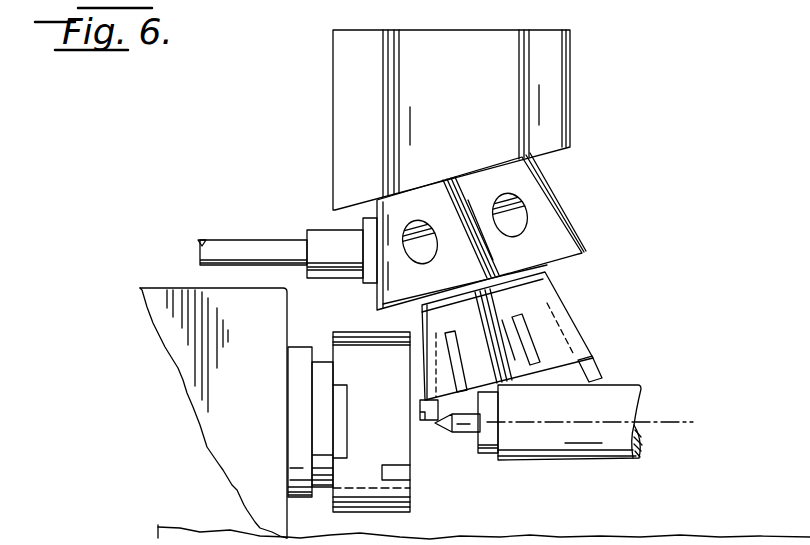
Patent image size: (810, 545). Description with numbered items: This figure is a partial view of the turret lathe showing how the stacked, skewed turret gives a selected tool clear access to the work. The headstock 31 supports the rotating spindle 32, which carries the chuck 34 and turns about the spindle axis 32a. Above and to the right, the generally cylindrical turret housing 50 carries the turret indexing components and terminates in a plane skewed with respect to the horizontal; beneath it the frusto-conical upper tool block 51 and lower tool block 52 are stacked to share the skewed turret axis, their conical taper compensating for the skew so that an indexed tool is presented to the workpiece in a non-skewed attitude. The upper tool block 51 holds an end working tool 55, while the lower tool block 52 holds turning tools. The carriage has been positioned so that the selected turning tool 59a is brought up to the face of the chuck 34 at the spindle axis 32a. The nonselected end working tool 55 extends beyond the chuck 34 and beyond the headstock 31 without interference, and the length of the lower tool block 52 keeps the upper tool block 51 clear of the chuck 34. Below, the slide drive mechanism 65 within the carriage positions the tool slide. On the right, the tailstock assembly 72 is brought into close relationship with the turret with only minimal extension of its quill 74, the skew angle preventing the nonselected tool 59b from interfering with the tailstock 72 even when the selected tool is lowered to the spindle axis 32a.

The headstock 31 is at (184, 376).
The spindle 32 is at (317, 397).
The spindle axis 32a is at (680, 422).
The chuck 34 is at (357, 333).
The turret housing 50 is at (481, 34).
The upper tool block 51 is at (548, 192).
The lower tool block 52 is at (548, 283).
The end working tool 55 is at (243, 245).
The selected turning tool 59a is at (420, 408).
The nonselected turning tool 59b is at (600, 368).
The slide drive mechanism 65 is at (537, 537).
The tailstock assembly 72 is at (632, 391).
The quill 74 is at (463, 433).